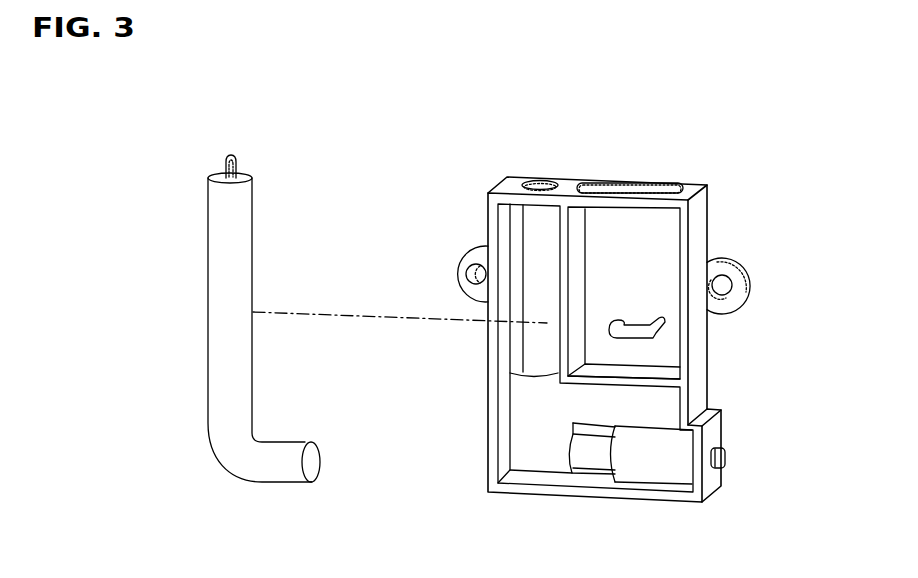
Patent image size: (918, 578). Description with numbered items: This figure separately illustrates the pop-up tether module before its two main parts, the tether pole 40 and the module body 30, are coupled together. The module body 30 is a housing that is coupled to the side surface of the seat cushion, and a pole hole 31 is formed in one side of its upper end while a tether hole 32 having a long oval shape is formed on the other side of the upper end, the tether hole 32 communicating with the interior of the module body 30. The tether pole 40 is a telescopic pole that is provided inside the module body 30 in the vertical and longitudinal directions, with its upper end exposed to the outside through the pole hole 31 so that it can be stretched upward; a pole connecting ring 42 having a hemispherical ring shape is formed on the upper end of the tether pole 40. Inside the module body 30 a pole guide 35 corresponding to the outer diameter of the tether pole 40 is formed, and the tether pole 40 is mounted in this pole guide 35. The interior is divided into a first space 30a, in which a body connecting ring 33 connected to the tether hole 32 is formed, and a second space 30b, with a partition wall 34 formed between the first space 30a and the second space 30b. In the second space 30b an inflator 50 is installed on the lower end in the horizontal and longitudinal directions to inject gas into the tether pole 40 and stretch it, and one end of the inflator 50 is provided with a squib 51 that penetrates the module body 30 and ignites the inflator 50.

The module body 30 is at (700, 205).
The first space 30a is at (660, 248).
The second space 30b is at (663, 407).
The pole hole 31 is at (541, 184).
The tether hole 32 is at (633, 187).
The body connecting ring 33 is at (653, 337).
The partition wall 34 is at (663, 375).
The pole guide 35 is at (540, 352).
The tether pole 40 is at (216, 307).
The pole connecting ring 42 is at (230, 154).
The inflator 50 is at (650, 458).
The squib 51 is at (727, 457).